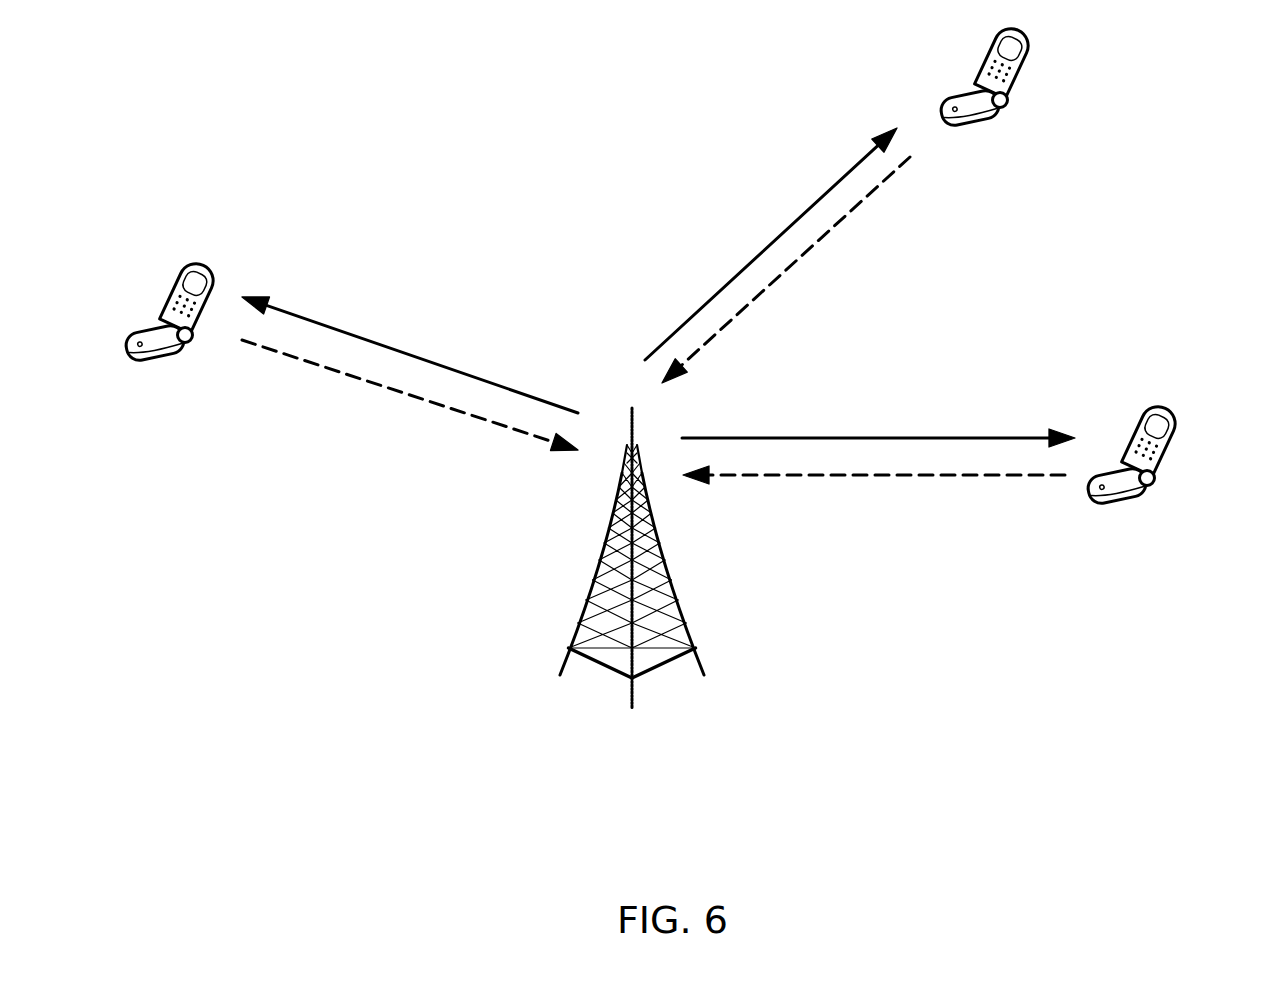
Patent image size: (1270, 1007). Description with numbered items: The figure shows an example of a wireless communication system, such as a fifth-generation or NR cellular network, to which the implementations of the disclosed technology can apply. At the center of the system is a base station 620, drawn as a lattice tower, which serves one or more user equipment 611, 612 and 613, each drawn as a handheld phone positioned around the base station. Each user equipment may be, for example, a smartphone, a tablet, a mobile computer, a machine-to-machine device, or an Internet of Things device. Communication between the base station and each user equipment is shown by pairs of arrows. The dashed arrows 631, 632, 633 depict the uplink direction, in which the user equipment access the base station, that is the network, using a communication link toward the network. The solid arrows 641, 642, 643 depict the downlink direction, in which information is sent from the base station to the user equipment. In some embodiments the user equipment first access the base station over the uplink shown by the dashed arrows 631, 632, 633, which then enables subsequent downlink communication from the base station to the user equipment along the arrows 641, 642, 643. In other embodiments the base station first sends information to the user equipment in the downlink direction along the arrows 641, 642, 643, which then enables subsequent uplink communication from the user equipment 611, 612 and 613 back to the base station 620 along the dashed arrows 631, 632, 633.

The user equipment 611 is at (180, 355).
The user equipment 612 is at (1141, 497).
The user equipment 613 is at (995, 118).
The base station 620 is at (690, 632).
The dashed arrow 631 is at (450, 408).
The dashed arrow 632 is at (836, 480).
The dashed arrow 633 is at (810, 247).
The arrow 641 is at (348, 335).
The arrow 642 is at (985, 433).
The arrow 643 is at (817, 200).